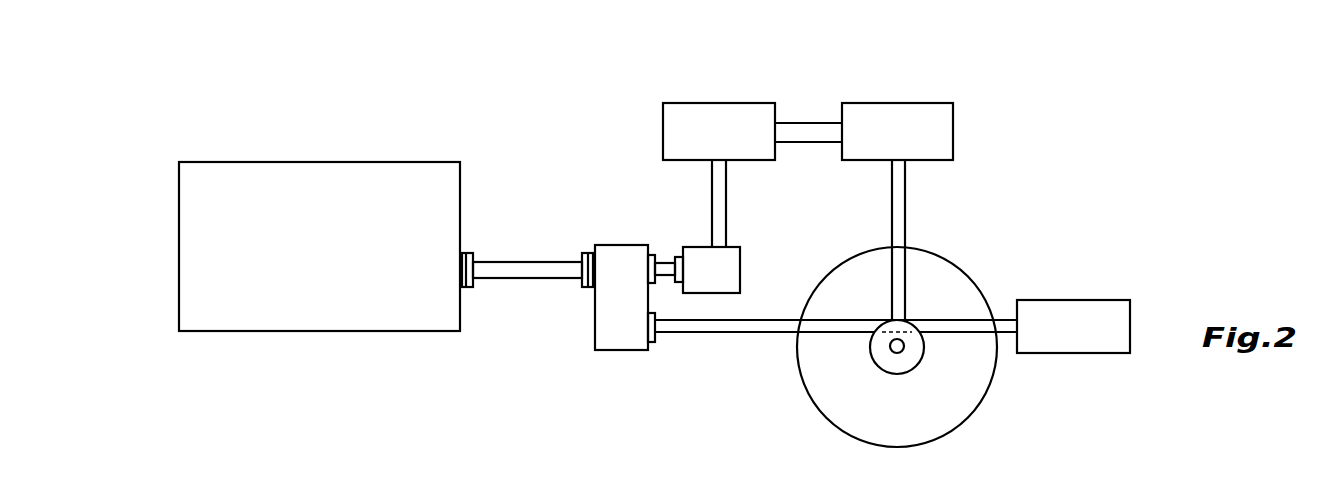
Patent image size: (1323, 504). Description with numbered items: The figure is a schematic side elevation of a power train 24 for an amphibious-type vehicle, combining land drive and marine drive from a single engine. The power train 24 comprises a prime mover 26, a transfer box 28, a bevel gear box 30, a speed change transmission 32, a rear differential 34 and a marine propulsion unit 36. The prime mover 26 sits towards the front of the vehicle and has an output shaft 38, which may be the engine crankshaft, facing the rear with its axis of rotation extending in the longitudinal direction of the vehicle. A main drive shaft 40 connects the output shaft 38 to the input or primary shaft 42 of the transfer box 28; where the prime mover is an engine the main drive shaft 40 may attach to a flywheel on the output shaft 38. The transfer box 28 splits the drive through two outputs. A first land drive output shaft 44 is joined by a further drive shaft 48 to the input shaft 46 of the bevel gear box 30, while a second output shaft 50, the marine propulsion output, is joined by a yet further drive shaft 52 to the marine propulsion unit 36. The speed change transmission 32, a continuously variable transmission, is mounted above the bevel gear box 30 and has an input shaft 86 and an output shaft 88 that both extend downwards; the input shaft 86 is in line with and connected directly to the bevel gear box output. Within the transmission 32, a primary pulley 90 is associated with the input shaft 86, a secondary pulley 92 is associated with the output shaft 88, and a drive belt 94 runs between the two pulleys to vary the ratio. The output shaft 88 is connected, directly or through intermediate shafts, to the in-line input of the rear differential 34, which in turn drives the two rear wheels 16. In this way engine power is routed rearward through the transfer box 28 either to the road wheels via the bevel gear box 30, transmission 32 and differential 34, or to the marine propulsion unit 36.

The rear wheels 16 is at (970, 272).
The power train 24 is at (1062, 161).
The prime mover 26 is at (254, 182).
The transfer box 28 is at (607, 306).
The bevel gear box 30 is at (730, 265).
The speed change transmission 32 is at (809, 86).
The rear differential 34 is at (910, 360).
The marine propulsion unit 36 is at (1090, 318).
The output shaft 38 is at (464, 254).
The main drive shaft 40 is at (503, 270).
The primary shaft 42 is at (594, 250).
The first land drive output shaft 44 is at (651, 254).
The input shaft 46 is at (683, 268).
The further drive shaft 48 is at (668, 273).
The second output shaft 50 is at (652, 350).
The yet further drive shaft 52 is at (773, 326).
The input shaft 86 is at (720, 198).
The output shaft 88 is at (903, 198).
The primary pulley 90 is at (677, 123).
The secondary pulley 92 is at (931, 127).
The drive belt 94 is at (806, 128).